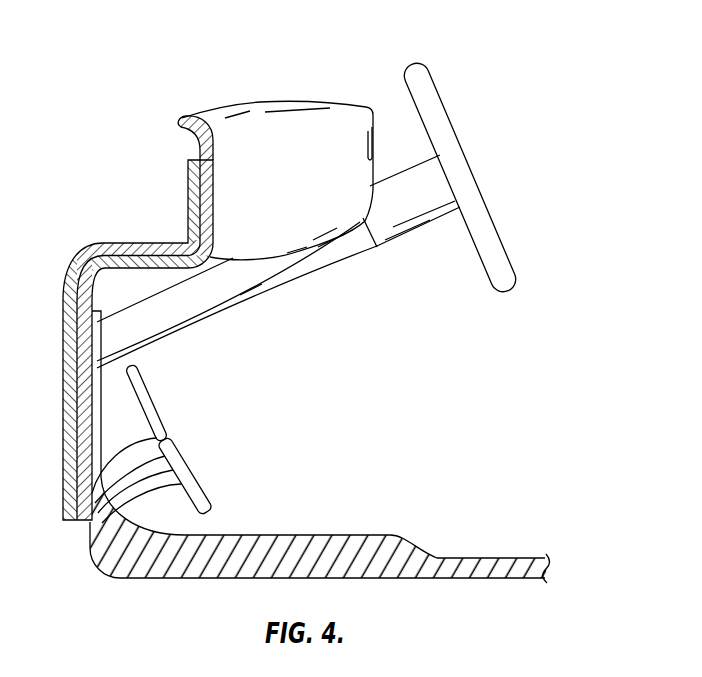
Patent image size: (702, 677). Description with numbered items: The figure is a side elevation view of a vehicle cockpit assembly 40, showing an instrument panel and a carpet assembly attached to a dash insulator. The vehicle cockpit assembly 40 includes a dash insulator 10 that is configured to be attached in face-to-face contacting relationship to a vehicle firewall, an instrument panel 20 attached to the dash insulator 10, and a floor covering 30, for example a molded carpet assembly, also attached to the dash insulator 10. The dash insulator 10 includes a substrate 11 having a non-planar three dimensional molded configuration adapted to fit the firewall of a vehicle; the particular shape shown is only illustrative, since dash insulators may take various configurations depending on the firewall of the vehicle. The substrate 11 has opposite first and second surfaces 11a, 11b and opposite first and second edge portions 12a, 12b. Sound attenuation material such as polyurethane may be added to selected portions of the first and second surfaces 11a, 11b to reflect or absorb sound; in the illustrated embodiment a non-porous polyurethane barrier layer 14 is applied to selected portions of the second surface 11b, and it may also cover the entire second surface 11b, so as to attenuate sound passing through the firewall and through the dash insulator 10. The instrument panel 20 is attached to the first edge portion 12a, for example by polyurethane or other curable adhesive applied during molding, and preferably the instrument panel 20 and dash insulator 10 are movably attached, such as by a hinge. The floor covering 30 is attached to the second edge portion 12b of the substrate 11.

The dash insulator 10 is at (166, 94).
The substrate 11 is at (113, 278).
The first surface 11a is at (175, 265).
The second surface 11b is at (192, 143).
The first edge portion 12a is at (207, 135).
The second edge portion 12b is at (93, 495).
The polyurethane barrier layer 14 is at (95, 247).
The instrument panel 20 is at (374, 102).
The floor covering 30 is at (378, 533).
The vehicle cockpit assembly 40 is at (492, 170).